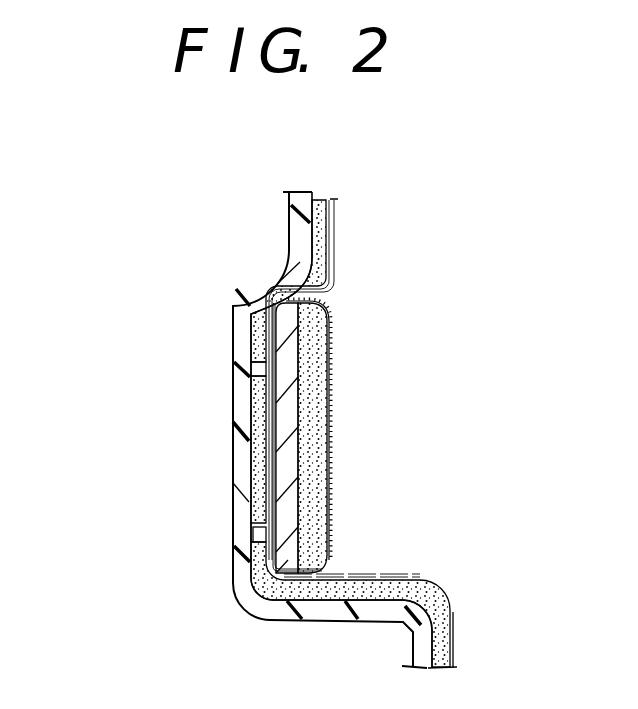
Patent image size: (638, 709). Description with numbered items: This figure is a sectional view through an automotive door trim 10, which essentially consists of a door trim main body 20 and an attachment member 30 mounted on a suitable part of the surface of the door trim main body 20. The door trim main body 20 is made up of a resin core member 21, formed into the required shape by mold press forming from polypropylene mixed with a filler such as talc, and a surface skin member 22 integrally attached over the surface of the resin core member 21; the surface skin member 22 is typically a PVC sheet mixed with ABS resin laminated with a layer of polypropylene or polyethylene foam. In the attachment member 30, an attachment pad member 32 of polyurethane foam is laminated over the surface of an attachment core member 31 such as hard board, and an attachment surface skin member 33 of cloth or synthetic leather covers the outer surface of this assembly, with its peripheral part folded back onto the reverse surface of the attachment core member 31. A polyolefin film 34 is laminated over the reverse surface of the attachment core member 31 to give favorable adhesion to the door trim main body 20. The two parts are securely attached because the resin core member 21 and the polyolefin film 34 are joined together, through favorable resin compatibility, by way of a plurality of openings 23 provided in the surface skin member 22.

The automotive door trim 10 is at (350, 228).
The door trim main body 20 is at (142, 175).
The resin core member 21 is at (298, 210).
The surface skin member 22 is at (312, 252).
The openings 23 is at (262, 392).
The attachment member 30 is at (410, 352).
The attachment core member 31 is at (288, 412).
The attachment pad member 32 is at (310, 367).
The attachment surface skin member 33 is at (332, 485).
The polyolefin film 34 is at (282, 475).